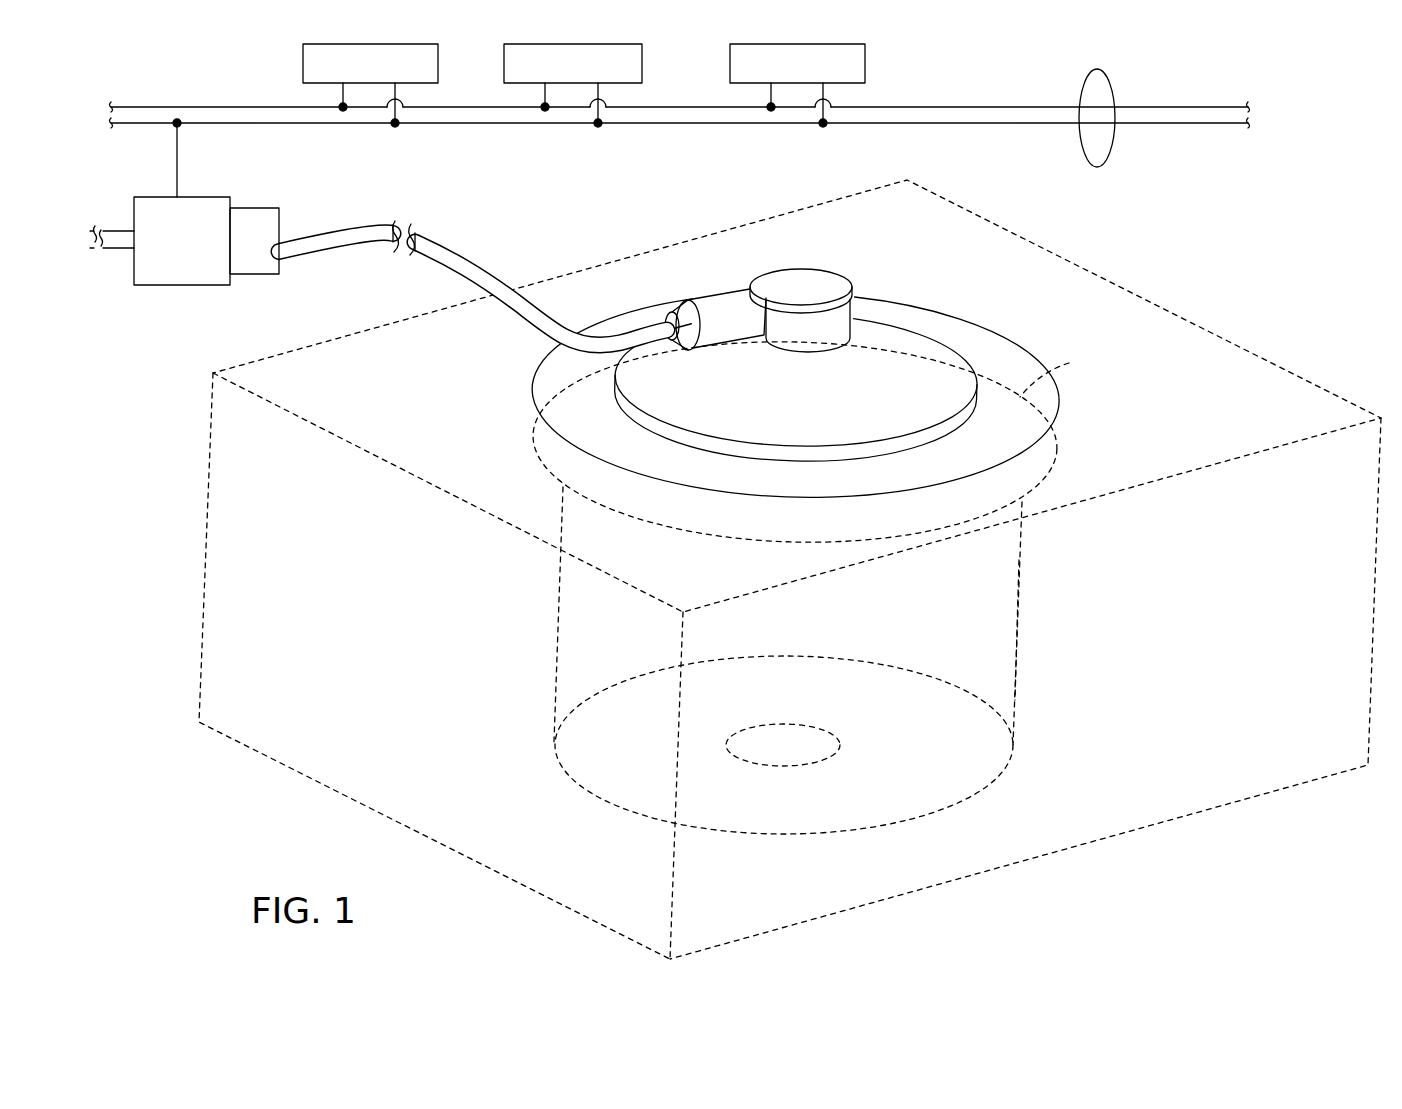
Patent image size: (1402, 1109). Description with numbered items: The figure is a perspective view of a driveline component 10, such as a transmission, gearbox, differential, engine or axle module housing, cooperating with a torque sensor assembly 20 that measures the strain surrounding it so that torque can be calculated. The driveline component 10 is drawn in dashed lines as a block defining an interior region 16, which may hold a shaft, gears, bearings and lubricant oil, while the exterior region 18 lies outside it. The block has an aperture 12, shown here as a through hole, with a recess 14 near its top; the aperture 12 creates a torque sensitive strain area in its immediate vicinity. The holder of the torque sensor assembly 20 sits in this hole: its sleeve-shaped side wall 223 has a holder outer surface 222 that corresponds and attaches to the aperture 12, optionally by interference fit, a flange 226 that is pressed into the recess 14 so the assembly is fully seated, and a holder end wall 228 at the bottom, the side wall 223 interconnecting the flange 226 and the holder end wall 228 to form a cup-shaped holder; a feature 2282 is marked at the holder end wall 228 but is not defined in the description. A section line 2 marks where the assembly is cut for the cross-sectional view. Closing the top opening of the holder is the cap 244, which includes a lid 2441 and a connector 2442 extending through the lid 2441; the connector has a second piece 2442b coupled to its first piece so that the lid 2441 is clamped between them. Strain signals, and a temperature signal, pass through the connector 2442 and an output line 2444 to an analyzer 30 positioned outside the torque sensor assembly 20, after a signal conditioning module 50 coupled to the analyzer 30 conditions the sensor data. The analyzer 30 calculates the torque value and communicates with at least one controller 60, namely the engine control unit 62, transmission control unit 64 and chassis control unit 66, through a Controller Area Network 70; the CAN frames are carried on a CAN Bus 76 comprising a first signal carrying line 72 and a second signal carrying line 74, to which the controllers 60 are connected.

The section line 2 is at (339, 482).
The driveline component 10 is at (1225, 411).
The aperture 12 is at (1008, 343).
The recess 14 is at (1069, 362).
The interior region 16 is at (1186, 889).
The exterior region 18 is at (718, 181).
The torque sensor assembly 20 is at (895, 268).
The analyzer 30 is at (169, 251).
The signal conditioning module 50 is at (241, 254).
The controller 60 is at (288, 62).
The engine control unit (ECU) 62 is at (370, 83).
The transmission control unit (TCU) 64 is at (573, 83).
The chassis control unit (CCU) 66 is at (797, 83).
The Controller Area Network (CAN) 70 is at (1128, 92).
The first signal carrying line 72 is at (1228, 106).
The second signal carrying line 74 is at (1220, 125).
The CAN Bus 76 is at (1108, 78).
The holder outer surface 222 is at (1022, 605).
The side wall 223 is at (1024, 667).
The flange 226 is at (975, 451).
The holder end wall 228 is at (893, 766).
The bottom hole 2282 is at (787, 768).
The cap 244 is at (882, 337).
The lid 2441 is at (701, 403).
The connector 2442 is at (823, 260).
The second piece 2442b is at (770, 268).
The output line 2444 is at (479, 248).